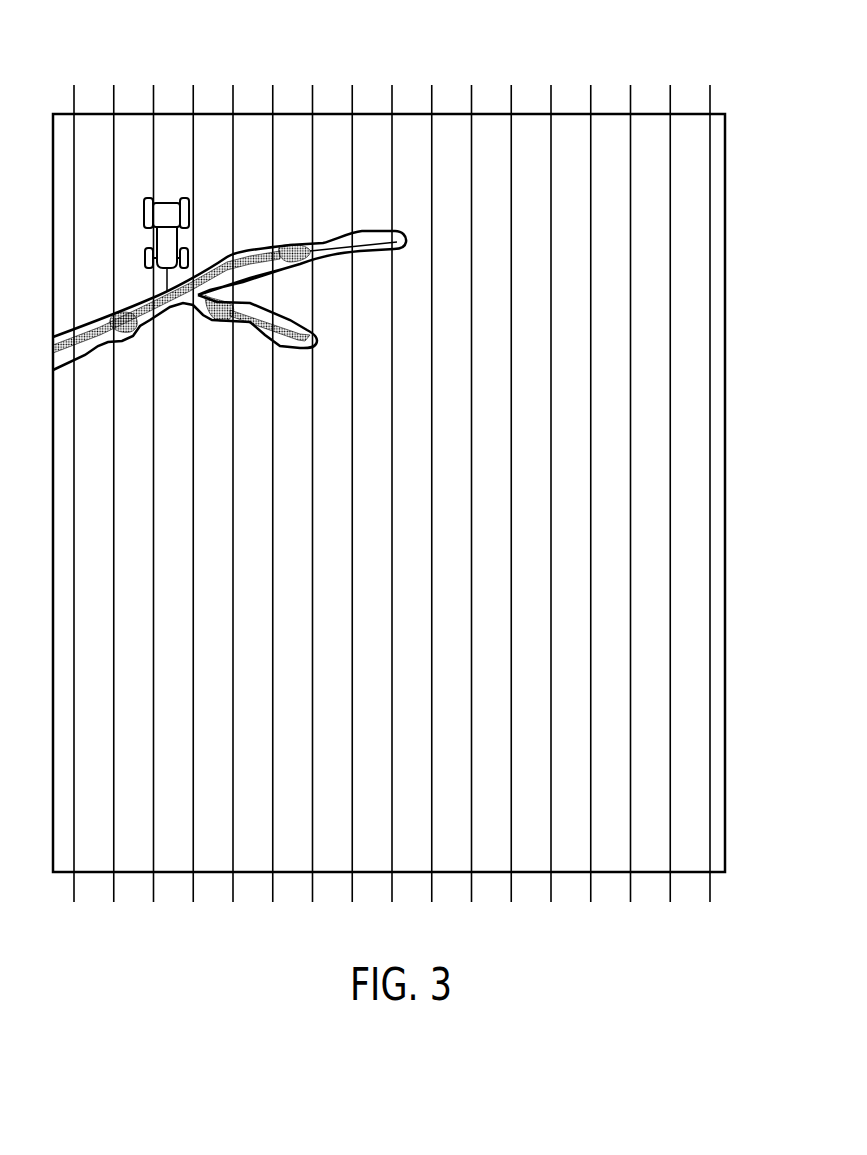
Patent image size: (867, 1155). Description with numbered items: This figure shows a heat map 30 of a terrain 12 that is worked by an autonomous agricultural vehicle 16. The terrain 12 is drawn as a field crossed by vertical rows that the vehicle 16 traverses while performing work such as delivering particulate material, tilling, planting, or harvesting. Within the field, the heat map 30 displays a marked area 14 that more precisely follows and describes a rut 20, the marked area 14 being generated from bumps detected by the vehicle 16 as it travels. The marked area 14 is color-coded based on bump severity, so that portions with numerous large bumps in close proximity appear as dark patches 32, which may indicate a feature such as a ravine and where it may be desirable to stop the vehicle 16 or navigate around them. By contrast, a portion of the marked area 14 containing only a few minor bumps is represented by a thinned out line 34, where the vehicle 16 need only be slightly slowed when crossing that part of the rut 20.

The heat map 30 is at (690, 113).
The terrain 12 is at (688, 276).
The vehicle 16 is at (168, 202).
The marked area 14 is at (257, 248).
The dark patches 32 is at (128, 315).
The thinned out line 34 is at (365, 243).
The rut 20 is at (181, 316).